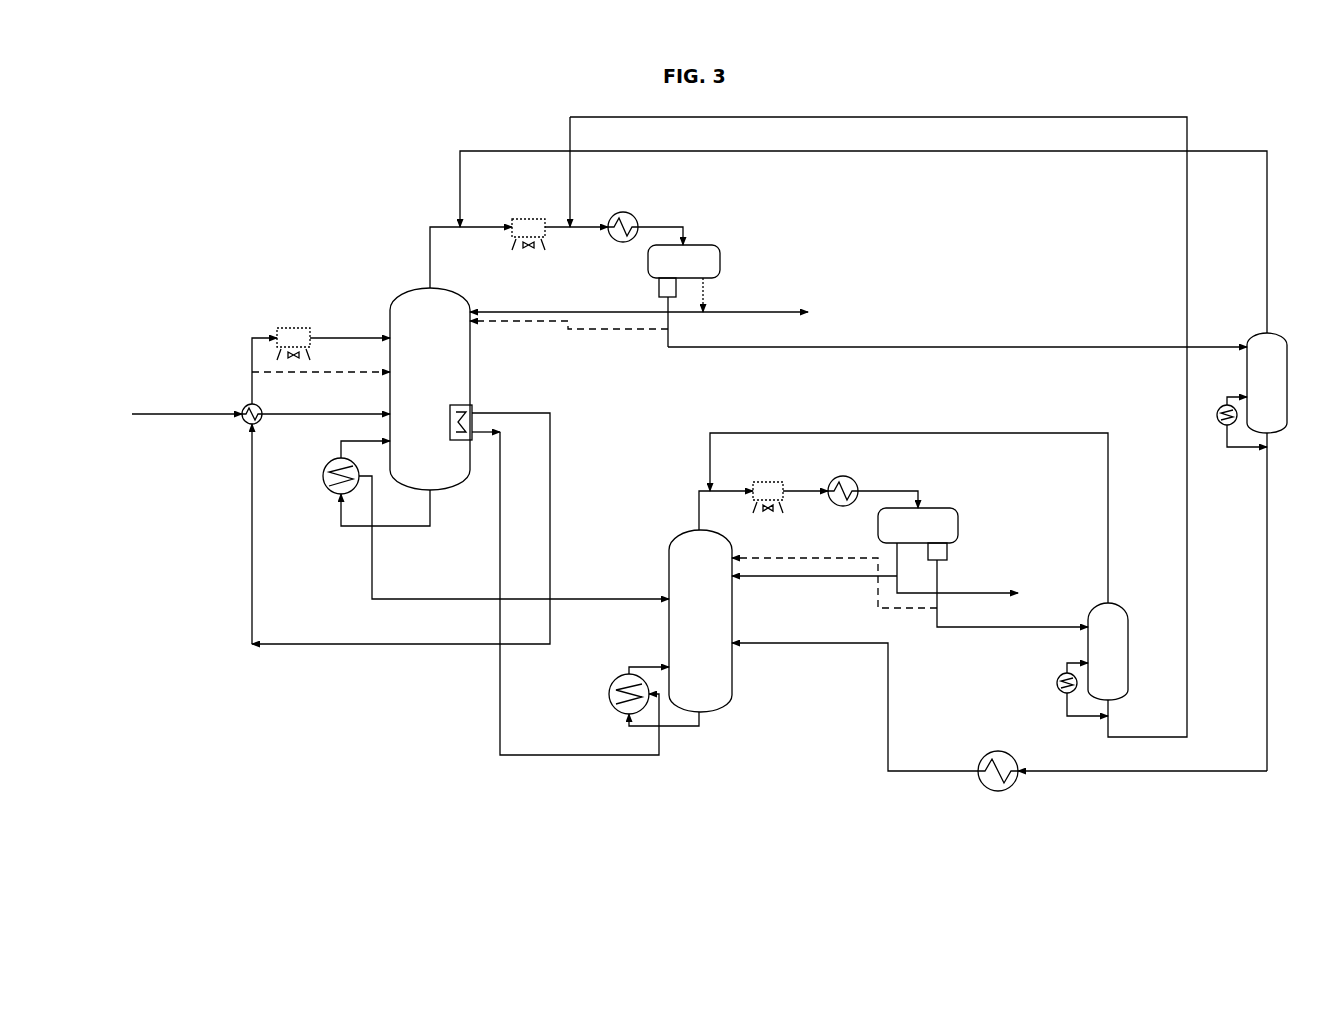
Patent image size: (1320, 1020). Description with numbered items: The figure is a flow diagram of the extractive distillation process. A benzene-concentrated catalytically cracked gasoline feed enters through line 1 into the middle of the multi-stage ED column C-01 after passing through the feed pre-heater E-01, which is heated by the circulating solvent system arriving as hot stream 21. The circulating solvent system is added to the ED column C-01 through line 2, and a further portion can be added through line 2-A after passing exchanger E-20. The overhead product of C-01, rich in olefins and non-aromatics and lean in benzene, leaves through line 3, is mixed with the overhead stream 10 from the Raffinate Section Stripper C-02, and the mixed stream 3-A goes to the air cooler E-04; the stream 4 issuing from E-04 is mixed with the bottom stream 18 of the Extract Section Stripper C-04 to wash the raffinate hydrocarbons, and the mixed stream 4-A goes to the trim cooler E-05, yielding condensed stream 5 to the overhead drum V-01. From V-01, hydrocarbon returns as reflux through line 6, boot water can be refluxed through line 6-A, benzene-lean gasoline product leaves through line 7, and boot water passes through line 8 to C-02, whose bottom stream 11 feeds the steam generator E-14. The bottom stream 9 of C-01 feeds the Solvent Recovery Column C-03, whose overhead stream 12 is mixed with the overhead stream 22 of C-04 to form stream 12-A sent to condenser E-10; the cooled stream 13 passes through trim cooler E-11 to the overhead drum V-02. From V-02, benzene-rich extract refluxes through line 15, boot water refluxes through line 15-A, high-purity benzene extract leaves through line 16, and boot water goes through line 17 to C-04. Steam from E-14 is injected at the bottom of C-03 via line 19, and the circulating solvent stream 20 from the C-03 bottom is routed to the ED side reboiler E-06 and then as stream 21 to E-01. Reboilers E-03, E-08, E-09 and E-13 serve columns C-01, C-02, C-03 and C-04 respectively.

The feed line 1 is at (261, 402).
The circulating solvent line 2 is at (321, 360).
The additional solvent line 2-A is at (321, 362).
The ED column overhead line 3 is at (458, 257).
The mixed overhead stream 3-A is at (863, 242).
The stream issuing from E-04 4 is at (576, 216).
The mixed stream to trim cooler 4-A is at (586, 172).
The condensed overhead stream 5 is at (666, 225).
The reflux line 6 is at (569, 319).
The water reflux line 6-A is at (569, 335).
The benzene lean gasoline product line 7 is at (757, 295).
The V-01 boot water line 8 is at (957, 336).
The ED column bottom stream 9 is at (505, 520).
The RSS overhead stream 10 is at (878, 427).
The RSS bottom stream 11 is at (1154, 584).
The SRC overhead stream 12 is at (711, 510).
The mixed SRC overhead stream 12-A is at (726, 505).
The cooled stream from E-10 13 is at (850, 489).
The extract reflux line 15 is at (875, 571).
The water reflux line 15-A is at (834, 574).
The extract product line 16 is at (1021, 577).
The V-02 boot water line 17 is at (1012, 605).
The ESS bottom stream 18 is at (1114, 712).
The steam injection line 19 is at (855, 707).
The circulating solvent stream 20 is at (585, 593).
The hot solvent line 21 is at (337, 528).
The ESS overhead stream 22 is at (909, 506).
The ED column C-01 is at (430, 389).
The Raffinate Section Stripper C-02 is at (1251, 373).
The Solvent Recovery Column C-03 is at (700, 621).
The Extract Section Stripper C-04 is at (1127, 651).
The overhead drum V-01 is at (684, 271).
The overhead drum V-02 is at (918, 534).
The feed pre-heater E-01 is at (232, 407).
The reboiler E-03 is at (319, 469).
The air cooler E-04 is at (526, 224).
The trim cooler E-05 is at (622, 237).
The ED side reboiler E-06 is at (438, 422).
The reboiler E-08 is at (1214, 399).
The reboiler E-09 is at (608, 694).
The condenser E-10 is at (765, 484).
The trim cooler E-11 is at (844, 481).
The reboiler E-13 is at (1046, 683).
The steam generator E-14 is at (997, 781).
The heat exchanger E-20 is at (293, 333).